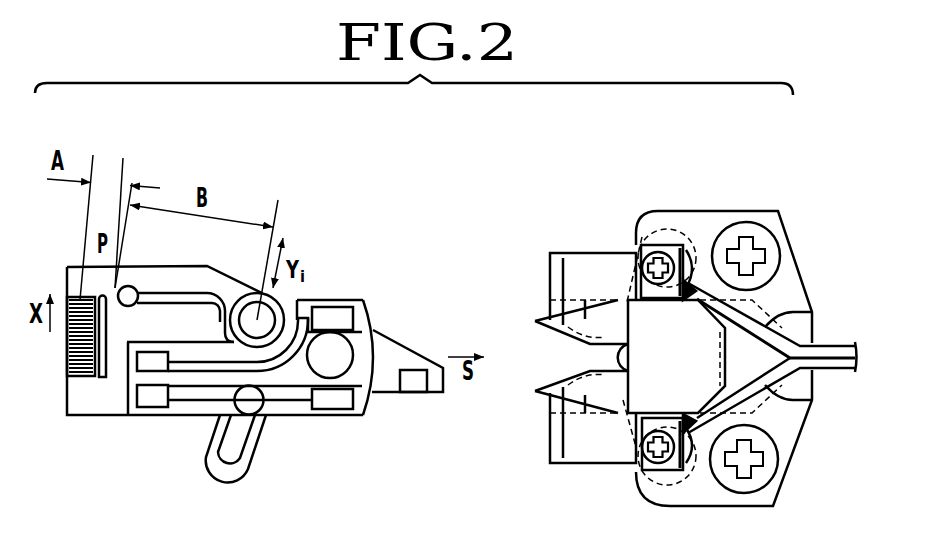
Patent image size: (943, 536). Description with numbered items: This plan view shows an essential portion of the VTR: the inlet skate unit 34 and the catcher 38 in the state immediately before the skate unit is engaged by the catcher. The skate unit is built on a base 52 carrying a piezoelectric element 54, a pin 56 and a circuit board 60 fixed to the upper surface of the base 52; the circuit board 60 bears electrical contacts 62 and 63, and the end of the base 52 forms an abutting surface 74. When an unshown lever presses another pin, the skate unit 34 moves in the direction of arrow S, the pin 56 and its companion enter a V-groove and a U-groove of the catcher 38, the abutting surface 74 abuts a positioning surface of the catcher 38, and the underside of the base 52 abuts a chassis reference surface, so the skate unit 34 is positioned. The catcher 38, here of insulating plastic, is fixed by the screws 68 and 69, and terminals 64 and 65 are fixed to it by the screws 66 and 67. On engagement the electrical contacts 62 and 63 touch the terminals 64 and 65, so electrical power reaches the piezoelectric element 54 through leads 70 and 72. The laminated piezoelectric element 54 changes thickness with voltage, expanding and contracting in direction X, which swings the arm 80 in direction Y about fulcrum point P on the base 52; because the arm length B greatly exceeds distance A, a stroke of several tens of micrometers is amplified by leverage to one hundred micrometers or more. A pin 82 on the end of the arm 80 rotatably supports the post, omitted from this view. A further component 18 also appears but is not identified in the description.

The lever 18 is at (250, 433).
The inlet skate unit 34 is at (254, 190).
The catcher 38 is at (708, 193).
The base 52 is at (76, 411).
The piezoelectric element 54 is at (67, 358).
The pin 56 is at (345, 355).
The circuit board 60 is at (178, 408).
The electrical contact 62 is at (350, 305).
The electrical contact 63 is at (345, 410).
The terminal 64 is at (580, 258).
The terminal 65 is at (577, 455).
The screw 66 is at (641, 240).
The screw 67 is at (647, 486).
The screw 68 is at (770, 247).
The screw 69 is at (770, 468).
The lead 70 is at (807, 313).
The lead 72 is at (790, 383).
The abutting surface 74 is at (417, 394).
The arm 80 is at (160, 275).
The pin 82 is at (282, 301).